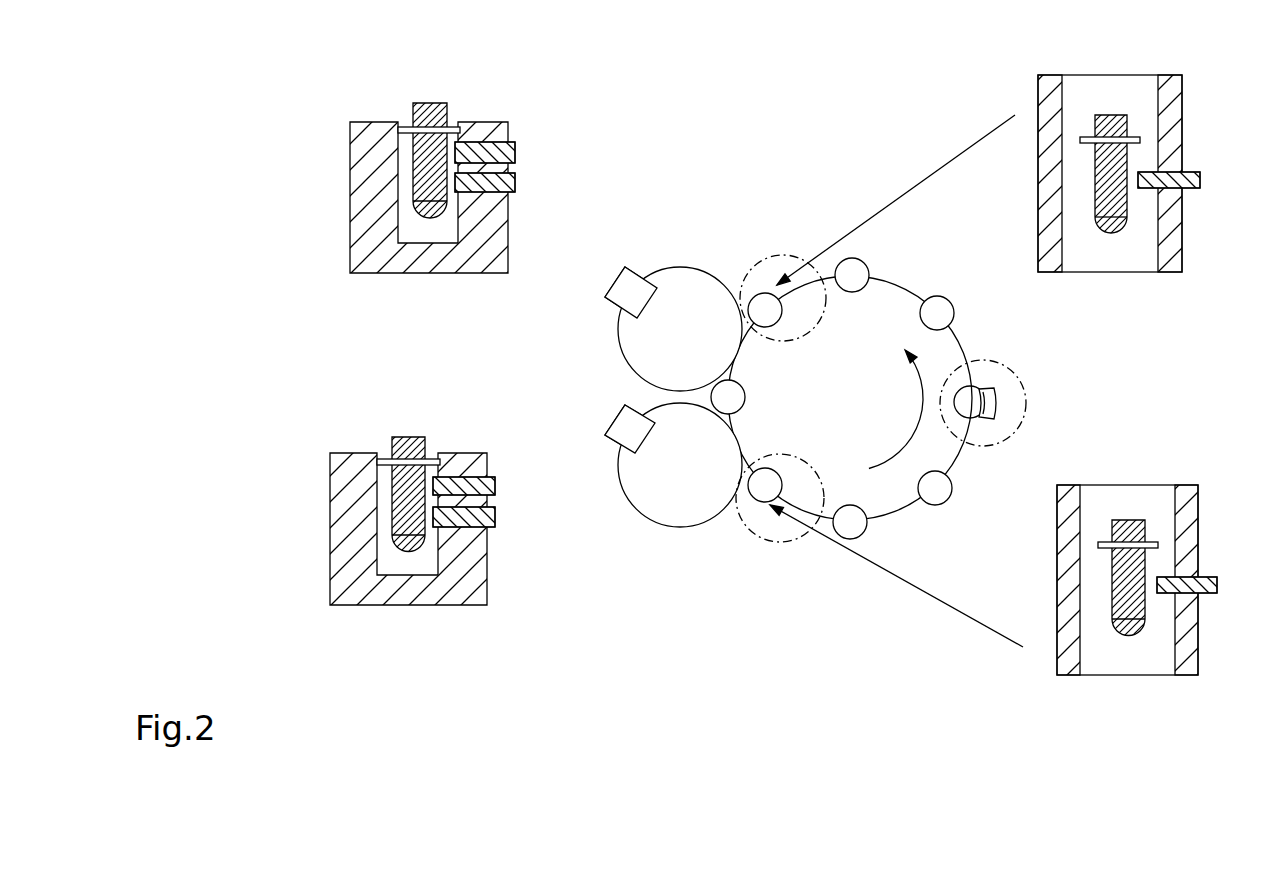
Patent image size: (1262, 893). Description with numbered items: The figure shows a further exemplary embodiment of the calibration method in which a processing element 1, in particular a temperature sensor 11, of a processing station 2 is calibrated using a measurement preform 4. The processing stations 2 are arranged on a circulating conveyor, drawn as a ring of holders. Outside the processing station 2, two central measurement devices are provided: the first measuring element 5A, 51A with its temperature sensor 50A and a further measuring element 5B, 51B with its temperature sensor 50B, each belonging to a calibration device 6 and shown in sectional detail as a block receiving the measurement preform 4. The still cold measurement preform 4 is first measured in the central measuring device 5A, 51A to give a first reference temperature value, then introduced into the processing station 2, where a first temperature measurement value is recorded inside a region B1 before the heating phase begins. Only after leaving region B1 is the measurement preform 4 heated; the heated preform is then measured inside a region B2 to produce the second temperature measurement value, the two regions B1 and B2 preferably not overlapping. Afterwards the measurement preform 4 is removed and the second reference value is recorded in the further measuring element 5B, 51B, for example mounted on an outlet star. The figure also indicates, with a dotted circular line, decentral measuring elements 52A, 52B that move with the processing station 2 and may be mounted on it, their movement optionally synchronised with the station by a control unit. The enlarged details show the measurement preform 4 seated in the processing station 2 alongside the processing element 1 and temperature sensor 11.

The processing element 1 is at (1200, 386).
The temperature sensor 11 is at (1200, 181).
The processing station 2 is at (1172, 103).
The measurement preform 4 is at (430, 200).
The measuring element 5A is at (383, 490).
The measuring element 5B is at (360, 165).
The calibration device 6 is at (515, 150).
The temperature sensor 50A is at (495, 515).
The temperature sensor 50B is at (515, 183).
The central measurement device 51A is at (449, 501).
The central measurement device 51B is at (462, 220).
The decentral measuring element 52A is at (1035, 403).
The decentral measuring element 52B is at (997, 393).
The region B1 is at (757, 520).
The region B2 is at (767, 272).